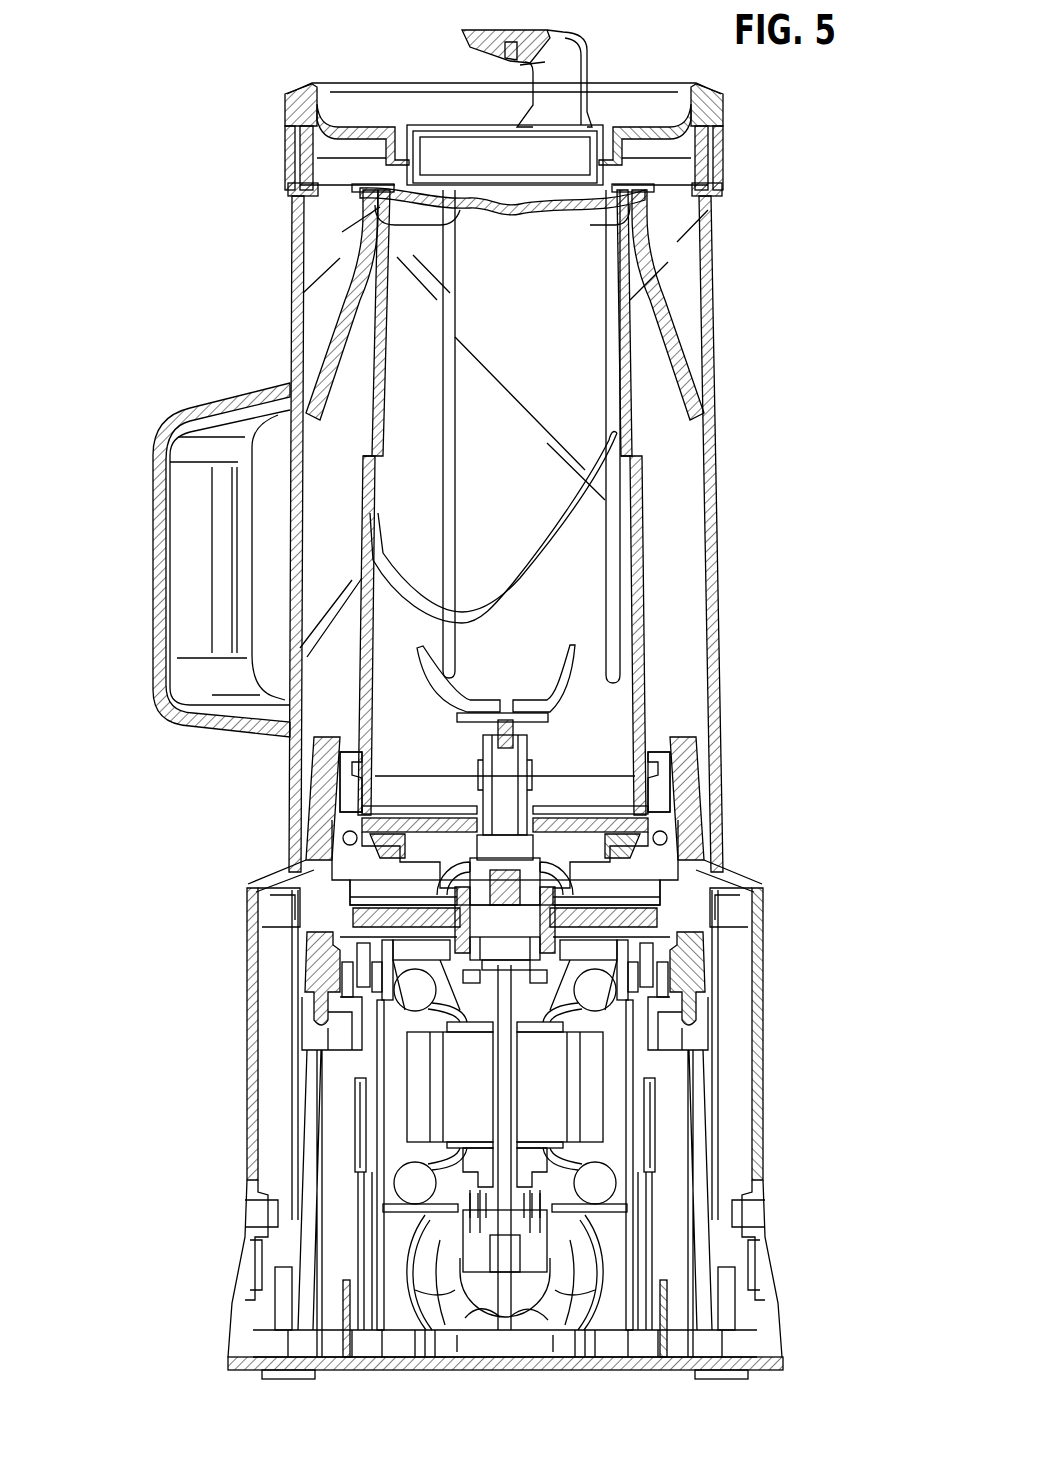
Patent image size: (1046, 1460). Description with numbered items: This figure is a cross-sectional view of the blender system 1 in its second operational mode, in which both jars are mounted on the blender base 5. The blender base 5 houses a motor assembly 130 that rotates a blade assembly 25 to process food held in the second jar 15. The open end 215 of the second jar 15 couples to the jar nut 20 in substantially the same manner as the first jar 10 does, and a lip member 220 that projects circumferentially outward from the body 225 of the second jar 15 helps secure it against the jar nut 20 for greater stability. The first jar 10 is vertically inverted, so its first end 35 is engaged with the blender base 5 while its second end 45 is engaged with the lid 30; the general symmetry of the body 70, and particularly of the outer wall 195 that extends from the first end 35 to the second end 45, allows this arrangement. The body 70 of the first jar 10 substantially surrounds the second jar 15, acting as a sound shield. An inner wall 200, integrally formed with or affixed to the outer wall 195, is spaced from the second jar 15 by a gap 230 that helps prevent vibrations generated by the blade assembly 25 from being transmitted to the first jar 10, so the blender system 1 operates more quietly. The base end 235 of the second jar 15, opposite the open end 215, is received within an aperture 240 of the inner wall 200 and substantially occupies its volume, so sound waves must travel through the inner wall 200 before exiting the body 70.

The blender system 1 is at (238, 118).
The blender base 5 is at (218, 1068).
The first jar 10 is at (122, 452).
The second jar 15 is at (662, 692).
The jar nut 20 is at (603, 912).
The blade assembly 25 is at (537, 746).
The lid 30 is at (378, 68).
The first end 35 is at (268, 795).
The second end 45 is at (296, 172).
The body 70 is at (735, 618).
The motor assembly 130 is at (386, 1100).
The outer wall 195 is at (716, 411).
The inner wall 200 is at (675, 328).
The open end 215 is at (392, 867).
The lip member 220 is at (347, 793).
The body 225 is at (343, 625).
The gap 230 is at (650, 418).
The base end 235 is at (432, 203).
The aperture 240 is at (648, 206).